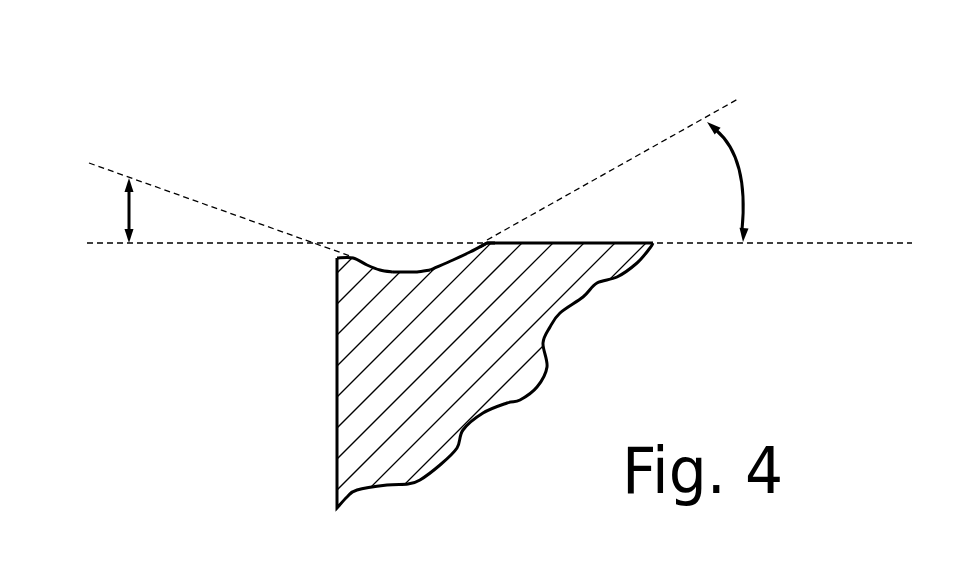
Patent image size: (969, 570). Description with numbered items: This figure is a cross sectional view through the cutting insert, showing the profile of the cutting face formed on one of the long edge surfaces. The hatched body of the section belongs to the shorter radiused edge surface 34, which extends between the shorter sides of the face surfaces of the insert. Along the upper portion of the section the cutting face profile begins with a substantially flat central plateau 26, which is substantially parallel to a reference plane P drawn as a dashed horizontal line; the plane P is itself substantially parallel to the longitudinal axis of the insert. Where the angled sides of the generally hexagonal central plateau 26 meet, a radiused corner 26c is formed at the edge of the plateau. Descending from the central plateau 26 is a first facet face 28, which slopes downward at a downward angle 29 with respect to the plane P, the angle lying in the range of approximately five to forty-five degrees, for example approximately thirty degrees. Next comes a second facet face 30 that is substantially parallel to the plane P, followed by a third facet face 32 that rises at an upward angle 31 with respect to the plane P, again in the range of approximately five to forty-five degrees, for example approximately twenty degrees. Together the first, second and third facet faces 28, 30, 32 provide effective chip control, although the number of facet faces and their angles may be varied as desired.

The central plateau 26 is at (543, 240).
The radiused corners 26c is at (487, 240).
The first facet face 28 is at (448, 260).
The downward angle 29 is at (738, 163).
The second facet face 30 is at (413, 270).
The upward angle 31 is at (128, 208).
The third facet face 32 is at (365, 257).
The shorter radiused edge surface 34 is at (312, 341).
The plane P is at (830, 243).